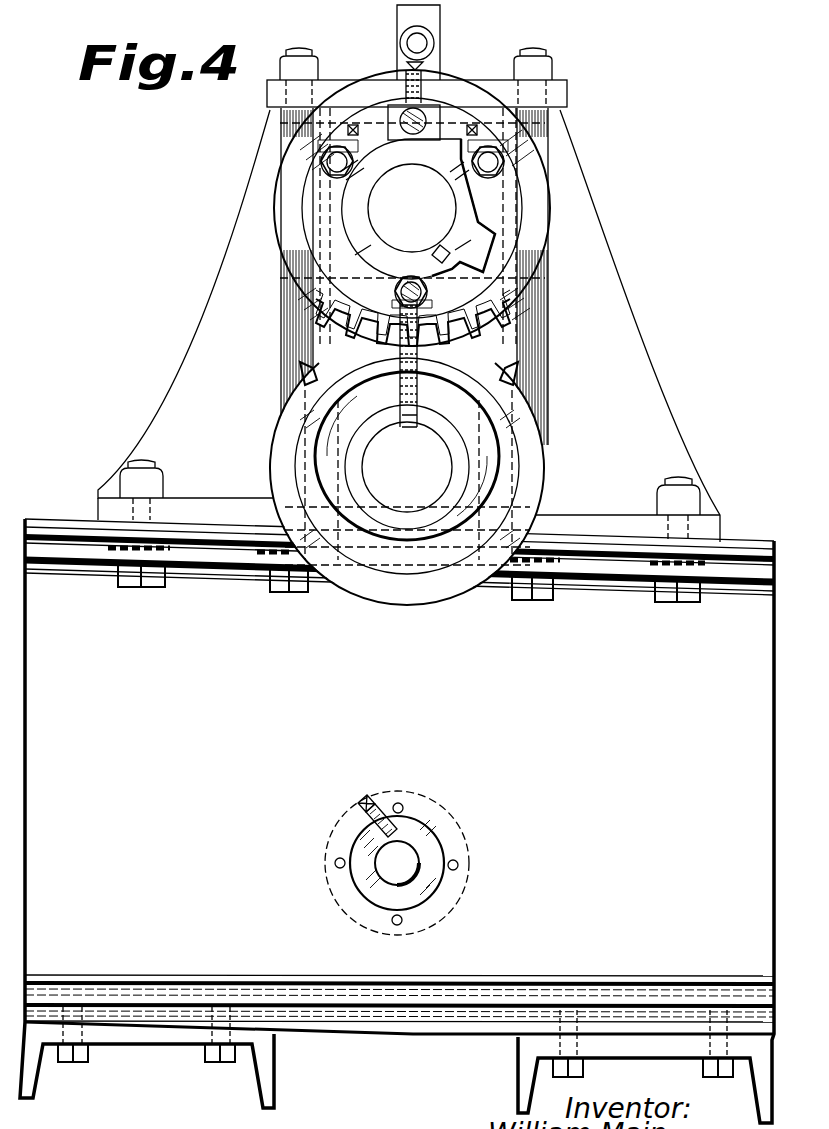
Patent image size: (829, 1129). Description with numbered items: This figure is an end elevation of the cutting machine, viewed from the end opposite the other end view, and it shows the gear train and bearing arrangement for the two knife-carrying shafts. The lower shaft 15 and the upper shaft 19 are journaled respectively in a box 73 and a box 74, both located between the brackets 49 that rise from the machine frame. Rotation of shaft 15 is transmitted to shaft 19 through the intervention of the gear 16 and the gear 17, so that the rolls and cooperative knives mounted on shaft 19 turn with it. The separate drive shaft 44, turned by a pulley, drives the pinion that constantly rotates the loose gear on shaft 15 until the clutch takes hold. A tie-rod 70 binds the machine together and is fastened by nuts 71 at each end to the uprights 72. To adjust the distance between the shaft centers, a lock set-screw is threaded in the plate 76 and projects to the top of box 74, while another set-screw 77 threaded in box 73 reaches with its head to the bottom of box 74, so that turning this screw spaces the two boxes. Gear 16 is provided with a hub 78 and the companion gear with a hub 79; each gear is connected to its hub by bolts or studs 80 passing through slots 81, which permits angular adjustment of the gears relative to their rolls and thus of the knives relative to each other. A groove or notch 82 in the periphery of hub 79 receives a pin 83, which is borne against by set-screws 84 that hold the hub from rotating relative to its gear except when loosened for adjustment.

The shaft 15 is at (407, 467).
The gear 16 is at (280, 398).
The gear 17 is at (380, 78).
The shaft 19 is at (412, 208).
The shaft 44 is at (416, 867).
The brackets 49 is at (409, 325).
The tie-rod 70 is at (402, 42).
The nuts 71 is at (400, 50).
The uprights 72 is at (400, 14).
The box 73 is at (460, 412).
The box 74 is at (300, 250).
The plate 76 is at (267, 93).
The set-screw 77 is at (330, 360).
The hub 78 is at (395, 520).
The hub 79 is at (470, 210).
The bolts or studs 80 is at (333, 158).
The slots 81 is at (330, 193).
The groove or notch 82 is at (432, 108).
The pin 83 is at (433, 110).
The set-screws 84 is at (350, 131).